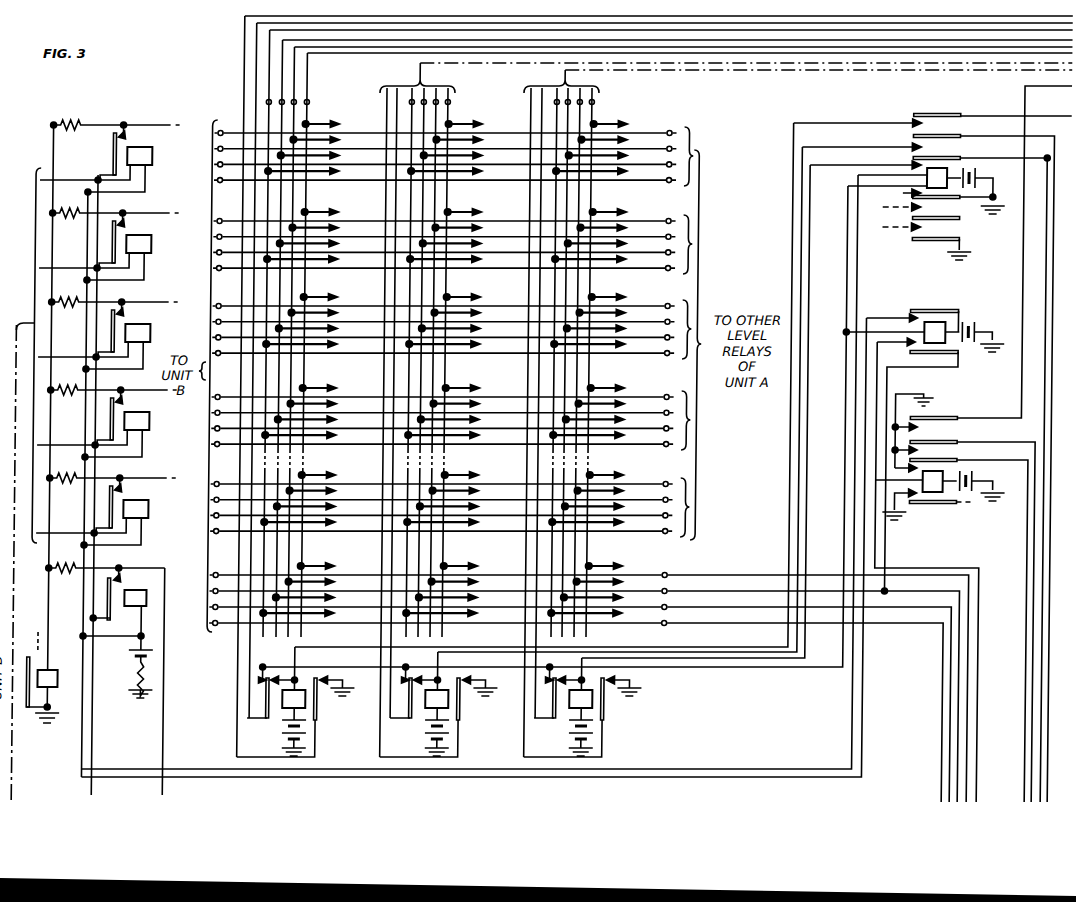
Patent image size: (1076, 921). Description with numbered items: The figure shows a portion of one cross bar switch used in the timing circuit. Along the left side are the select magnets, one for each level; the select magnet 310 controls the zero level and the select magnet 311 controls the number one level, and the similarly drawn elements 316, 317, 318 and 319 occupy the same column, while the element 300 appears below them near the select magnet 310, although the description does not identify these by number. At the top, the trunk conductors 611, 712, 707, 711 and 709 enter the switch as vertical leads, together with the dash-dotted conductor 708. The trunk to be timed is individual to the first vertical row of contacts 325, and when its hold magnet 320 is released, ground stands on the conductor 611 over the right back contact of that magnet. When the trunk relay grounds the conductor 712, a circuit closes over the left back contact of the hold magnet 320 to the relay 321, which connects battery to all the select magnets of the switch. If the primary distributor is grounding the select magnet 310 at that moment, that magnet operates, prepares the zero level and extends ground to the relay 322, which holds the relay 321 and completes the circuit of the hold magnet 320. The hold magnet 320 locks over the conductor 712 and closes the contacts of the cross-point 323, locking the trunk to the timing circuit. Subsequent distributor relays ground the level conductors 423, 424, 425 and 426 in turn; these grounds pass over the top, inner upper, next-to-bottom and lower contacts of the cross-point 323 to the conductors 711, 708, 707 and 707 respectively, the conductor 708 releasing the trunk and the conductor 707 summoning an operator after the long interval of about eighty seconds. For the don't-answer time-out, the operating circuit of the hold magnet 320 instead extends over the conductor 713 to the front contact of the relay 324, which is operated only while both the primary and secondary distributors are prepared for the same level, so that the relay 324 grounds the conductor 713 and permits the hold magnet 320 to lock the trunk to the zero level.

The conductor 611 is at (245, 21).
The conductor 712 is at (257, 43).
The conductor 707 is at (270, 52).
The conductor 711 is at (308, 70).
The conductor 709 is at (283, 86).
The conductor 708 is at (357, 53).
The vertical row of contacts 325 is at (308, 139).
The cross-point 323 is at (363, 580).
The level relay 319 is at (154, 156).
The level relay 318 is at (154, 244).
The level relay 317 is at (154, 333).
The level relay 316 is at (154, 421).
The select magnet 311 is at (154, 509).
The select magnet 310 is at (156, 578).
The relay 300 is at (36, 645).
The hold magnet 320 is at (330, 692).
The relay 322 is at (937, 189).
The relay 321 is at (942, 322).
The conductor 713 is at (990, 405).
The relay 324 is at (936, 497).
The conductor 423 is at (680, 578).
The conductor 424 is at (759, 575).
The conductor 425 is at (722, 612).
The conductor 426 is at (768, 625).